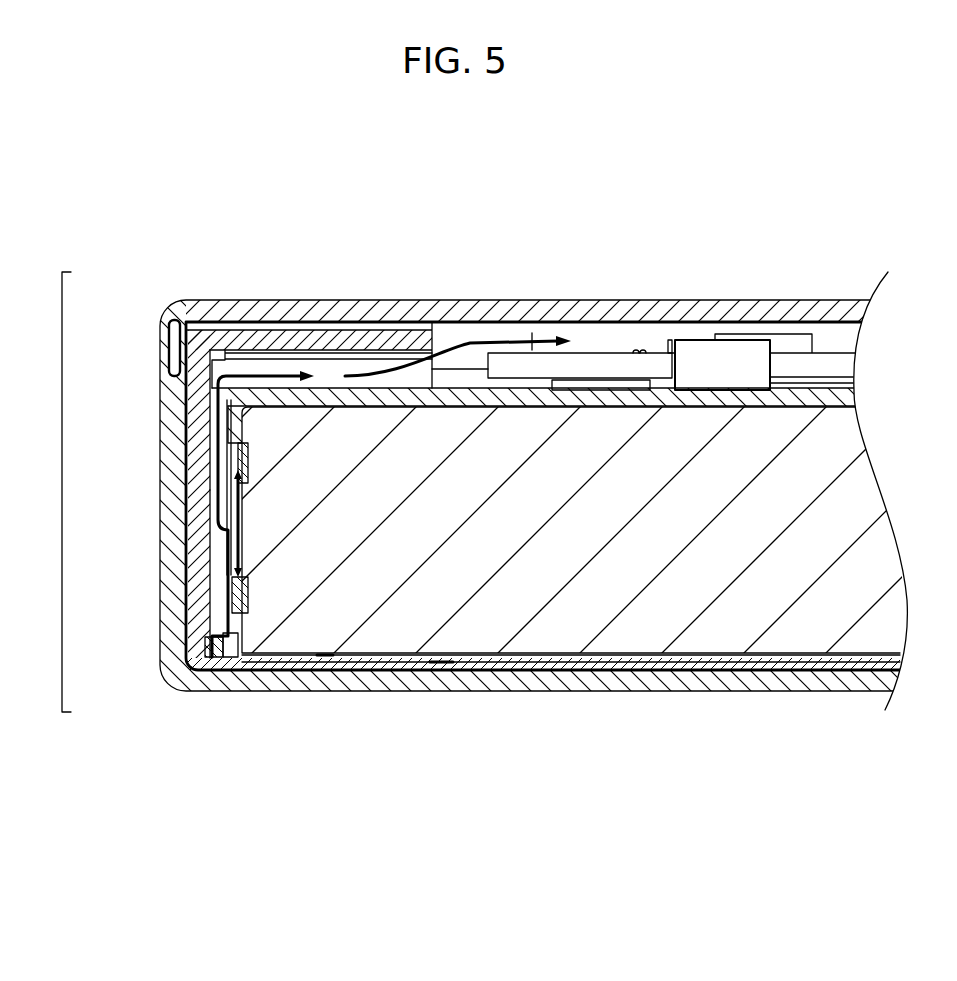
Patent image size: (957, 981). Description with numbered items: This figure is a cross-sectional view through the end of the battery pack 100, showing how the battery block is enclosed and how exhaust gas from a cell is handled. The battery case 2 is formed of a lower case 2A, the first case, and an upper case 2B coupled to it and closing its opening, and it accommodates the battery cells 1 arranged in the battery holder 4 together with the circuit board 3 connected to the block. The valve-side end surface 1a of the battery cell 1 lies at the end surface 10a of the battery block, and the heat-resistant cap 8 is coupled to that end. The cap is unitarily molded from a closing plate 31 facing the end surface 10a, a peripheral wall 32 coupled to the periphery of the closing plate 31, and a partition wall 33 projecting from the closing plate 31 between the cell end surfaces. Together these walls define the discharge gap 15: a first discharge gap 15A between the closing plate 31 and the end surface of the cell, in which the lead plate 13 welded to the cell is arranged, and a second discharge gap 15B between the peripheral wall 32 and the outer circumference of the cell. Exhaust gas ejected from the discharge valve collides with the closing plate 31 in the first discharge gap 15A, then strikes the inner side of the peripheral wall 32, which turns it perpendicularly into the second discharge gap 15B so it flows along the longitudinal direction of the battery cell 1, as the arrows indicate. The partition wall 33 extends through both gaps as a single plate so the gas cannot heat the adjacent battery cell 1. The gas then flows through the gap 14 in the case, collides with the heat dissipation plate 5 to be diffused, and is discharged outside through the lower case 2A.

The battery pack 100 is at (165, 226).
The battery cell 1 is at (571, 559).
The valve-side end surface 1a is at (221, 558).
The battery case 2 is at (530, 495).
The lower case 2A is at (478, 684).
The upper case 2B is at (315, 299).
The circuit board 3 is at (620, 360).
The battery holder 4 is at (388, 409).
The heat dissipation plate 5 is at (640, 664).
The heat-resistant cap 8 is at (62, 495).
The end surface of the battery block 10a is at (224, 612).
The lead plate 13 is at (238, 507).
The gap in the case 14 is at (649, 338).
The discharge gap 15 is at (628, 240).
The first discharge gap 15A is at (218, 540).
The second discharge gap 15B is at (320, 332).
The closing plate 31 is at (192, 519).
The peripheral wall 32 is at (170, 300).
The partition wall 33 is at (187, 378).